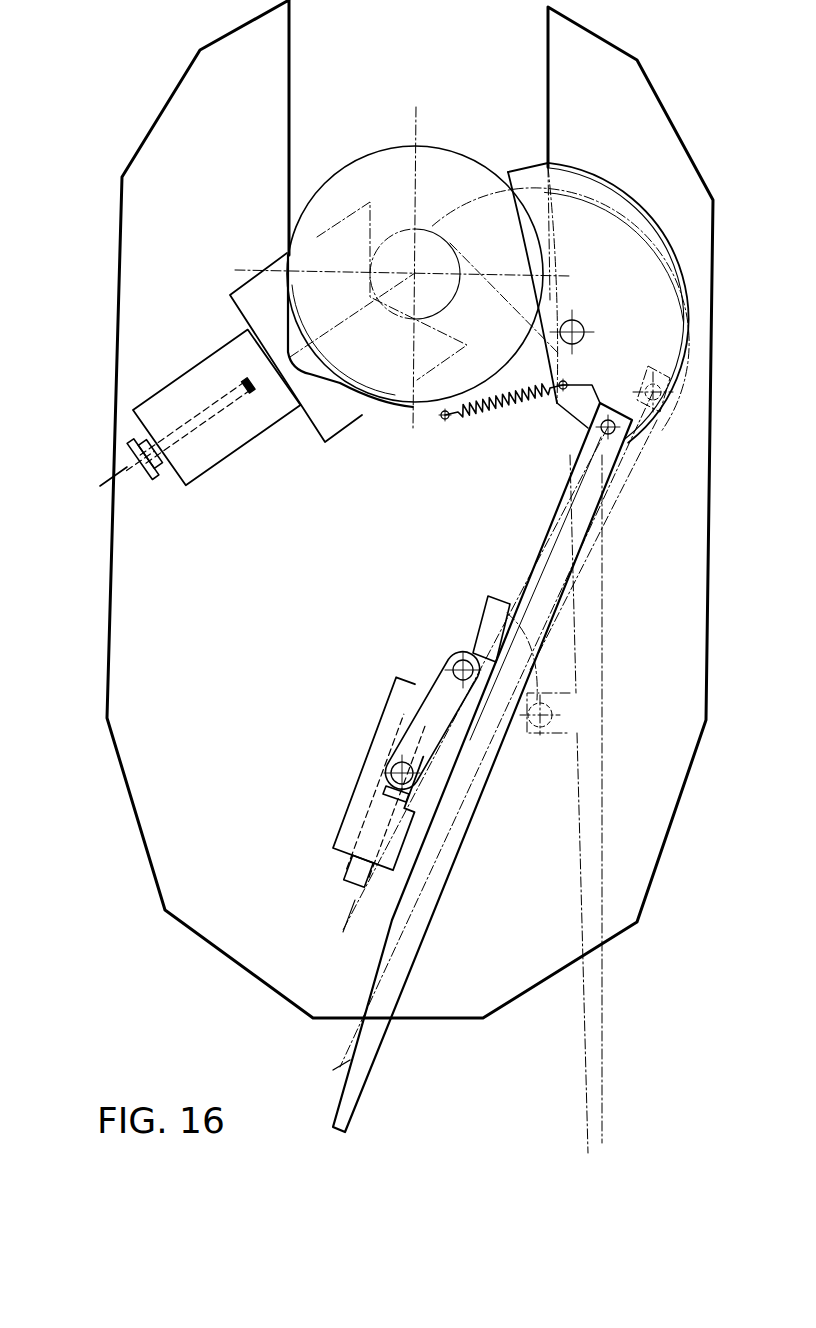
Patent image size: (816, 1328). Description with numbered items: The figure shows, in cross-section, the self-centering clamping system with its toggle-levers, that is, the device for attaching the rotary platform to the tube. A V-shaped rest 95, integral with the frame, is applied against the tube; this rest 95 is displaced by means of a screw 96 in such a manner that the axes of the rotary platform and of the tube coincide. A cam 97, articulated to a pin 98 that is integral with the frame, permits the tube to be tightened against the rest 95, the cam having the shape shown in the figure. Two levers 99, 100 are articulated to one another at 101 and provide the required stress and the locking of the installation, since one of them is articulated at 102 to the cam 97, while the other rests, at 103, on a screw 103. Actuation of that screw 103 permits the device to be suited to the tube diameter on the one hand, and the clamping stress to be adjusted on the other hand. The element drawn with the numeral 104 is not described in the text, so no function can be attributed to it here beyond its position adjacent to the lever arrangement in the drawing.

The V-shaped rest 95 is at (248, 295).
The screw 96 is at (125, 442).
The cam 97 is at (528, 180).
The pin 98 is at (580, 331).
The lever 99 is at (467, 778).
The lever 100 is at (442, 697).
The articulation 101 is at (462, 655).
The articulation 102 is at (627, 447).
The screw 103 is at (392, 763).
The solenoid 104 is at (348, 877).